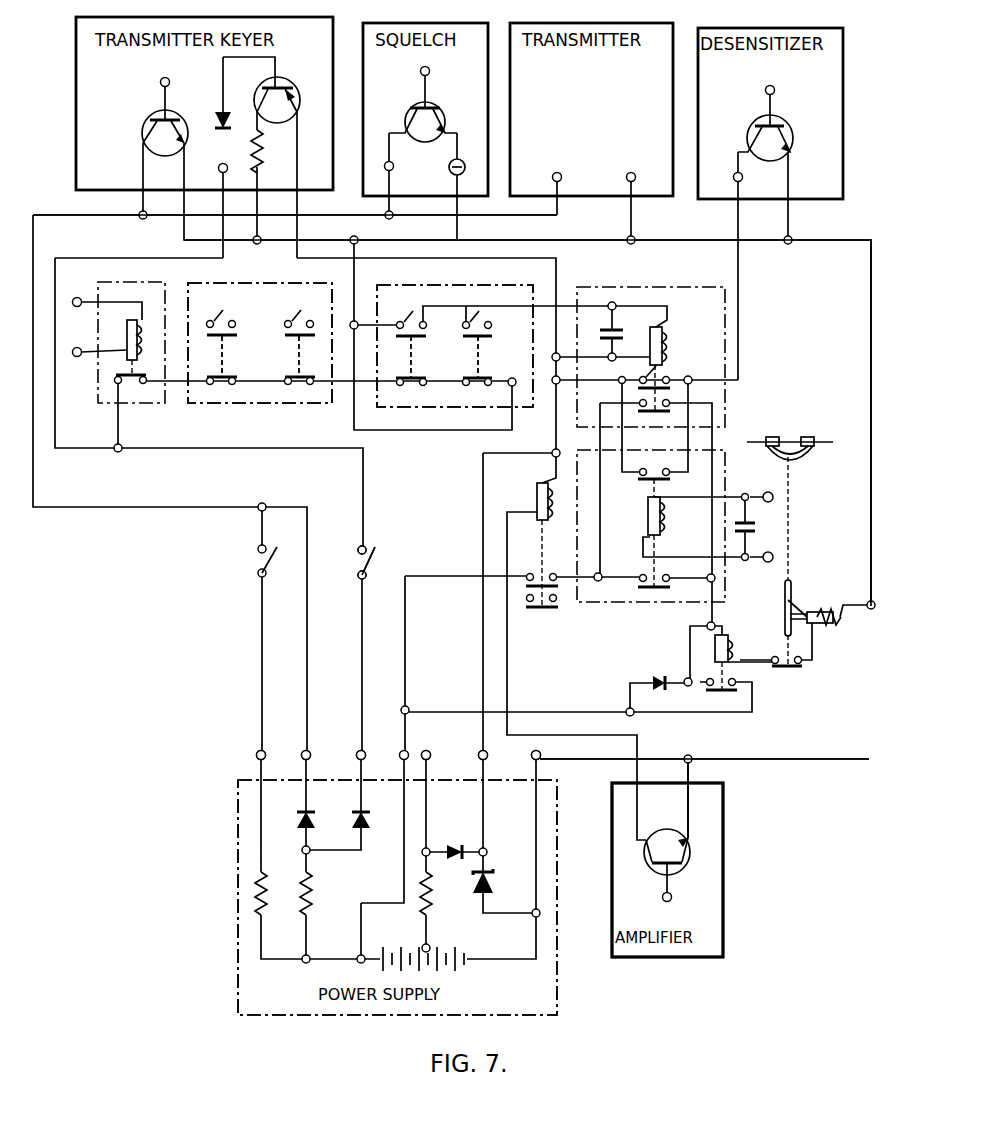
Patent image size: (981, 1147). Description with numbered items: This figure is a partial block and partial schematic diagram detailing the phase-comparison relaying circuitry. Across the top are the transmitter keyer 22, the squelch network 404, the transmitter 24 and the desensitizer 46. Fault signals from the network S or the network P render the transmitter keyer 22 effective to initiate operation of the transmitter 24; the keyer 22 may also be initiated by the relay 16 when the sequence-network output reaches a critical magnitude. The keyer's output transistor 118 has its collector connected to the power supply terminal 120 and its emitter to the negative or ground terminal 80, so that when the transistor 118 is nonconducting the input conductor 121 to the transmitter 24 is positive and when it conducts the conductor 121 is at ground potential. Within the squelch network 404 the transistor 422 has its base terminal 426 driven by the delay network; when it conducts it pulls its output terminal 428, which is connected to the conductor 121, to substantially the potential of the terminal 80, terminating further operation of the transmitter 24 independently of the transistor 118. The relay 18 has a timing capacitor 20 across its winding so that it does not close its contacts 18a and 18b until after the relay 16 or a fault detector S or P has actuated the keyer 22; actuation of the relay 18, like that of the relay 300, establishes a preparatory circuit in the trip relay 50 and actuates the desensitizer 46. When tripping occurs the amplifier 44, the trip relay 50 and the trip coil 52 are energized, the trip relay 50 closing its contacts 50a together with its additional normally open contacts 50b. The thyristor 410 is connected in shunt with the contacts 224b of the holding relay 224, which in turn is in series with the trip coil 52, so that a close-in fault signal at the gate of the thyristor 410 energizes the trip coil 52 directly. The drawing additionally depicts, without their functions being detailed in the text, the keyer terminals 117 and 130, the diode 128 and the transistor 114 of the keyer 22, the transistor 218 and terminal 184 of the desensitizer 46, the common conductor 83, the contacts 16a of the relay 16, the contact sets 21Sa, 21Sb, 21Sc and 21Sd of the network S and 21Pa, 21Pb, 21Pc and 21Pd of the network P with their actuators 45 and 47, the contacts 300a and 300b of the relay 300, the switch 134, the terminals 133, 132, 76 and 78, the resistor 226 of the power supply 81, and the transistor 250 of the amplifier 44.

The transmitter keyer 22 is at (260, 17).
The squelch network 404 is at (400, 23).
The transmitter 24 is at (577, 23).
The desensitizer 46 is at (778, 28).
The keyer terminal 117 is at (160, 79).
The output transistor 118 is at (142, 128).
The diode 128 is at (219, 108).
The keyer terminal 130 is at (219, 166).
The transistor 114 is at (293, 88).
The base terminal 426 is at (430, 71).
The transistor 422 is at (460, 105).
The output terminal 428 is at (393, 169).
The desensitizer transistor 218 is at (782, 113).
The desensitizer terminal 184 is at (733, 177).
The conductor 121 is at (317, 214).
The common conductor 83 is at (577, 240).
The relay 16 is at (145, 282).
The relay contacts 16a is at (128, 383).
The fault detector network S is at (300, 283).
The fault detector network P is at (503, 285).
The switch contacts 21Sc is at (227, 316).
The switch contacts 21Sd is at (304, 318).
The switch actuator 45 is at (222, 350).
The switch actuator 47 is at (299, 350).
The switch contacts 21Sa is at (214, 391).
The switch contacts 21Sb is at (303, 386).
The switch contacts 21Pc is at (403, 317).
The switch contacts 21Pd is at (497, 313).
The switch contacts 21Pa is at (418, 386).
The switch contacts 21Pb is at (482, 386).
The relay 300 is at (680, 288).
The relay contacts 300a is at (660, 374).
The relay contacts 300b is at (670, 407).
The relay 18 is at (723, 477).
The contacts 18a is at (640, 476).
The contacts 18b is at (668, 569).
The timing capacitor 20 is at (755, 525).
The trip relay 50 is at (537, 496).
The contacts 50a is at (540, 566).
The normally open contacts 50b is at (556, 603).
The switch 134 is at (372, 556).
The trip coil 52 is at (816, 609).
The thyristor 410 is at (660, 675).
The holding relay 224 is at (722, 672).
The contacts 224b is at (705, 688).
The power supply terminal 133 is at (256, 755).
The power supply terminal 120 is at (318, 745).
The power supply terminal 132 is at (370, 746).
The power supply terminal 76 is at (437, 745).
The power supply terminal 78 is at (488, 755).
The negative battery terminal 80 is at (545, 745).
The power supply 81 is at (557, 828).
The resistor 226 is at (313, 880).
The amplifier 44 is at (723, 868).
The amplifier transistor 250 is at (648, 863).